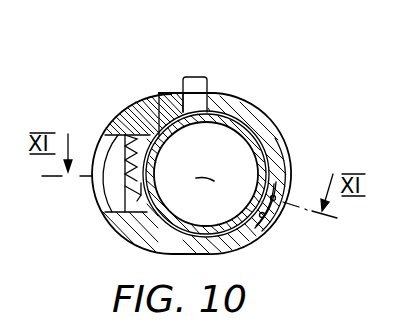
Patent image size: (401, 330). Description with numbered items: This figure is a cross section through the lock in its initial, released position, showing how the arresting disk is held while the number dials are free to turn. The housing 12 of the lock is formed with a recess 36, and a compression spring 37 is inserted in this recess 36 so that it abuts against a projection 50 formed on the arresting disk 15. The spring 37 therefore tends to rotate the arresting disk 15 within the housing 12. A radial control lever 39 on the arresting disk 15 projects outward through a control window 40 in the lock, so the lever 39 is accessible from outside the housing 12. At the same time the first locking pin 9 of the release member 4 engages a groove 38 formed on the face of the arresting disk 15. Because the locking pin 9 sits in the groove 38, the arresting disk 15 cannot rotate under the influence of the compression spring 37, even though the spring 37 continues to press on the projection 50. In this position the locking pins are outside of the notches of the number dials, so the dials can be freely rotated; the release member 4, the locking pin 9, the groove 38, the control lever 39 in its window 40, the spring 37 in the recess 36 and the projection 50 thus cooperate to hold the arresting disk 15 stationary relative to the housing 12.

The housing 12 is at (148, 112).
The control window 40 is at (166, 100).
The recess 36 is at (147, 133).
The compression spring 37 is at (107, 152).
The radial control lever 39 is at (192, 80).
The arresting disk 15 is at (249, 118).
The release member 4 is at (248, 135).
The groove 38 is at (273, 178).
The locking pin 9 is at (277, 198).
The projection 50 is at (138, 192).